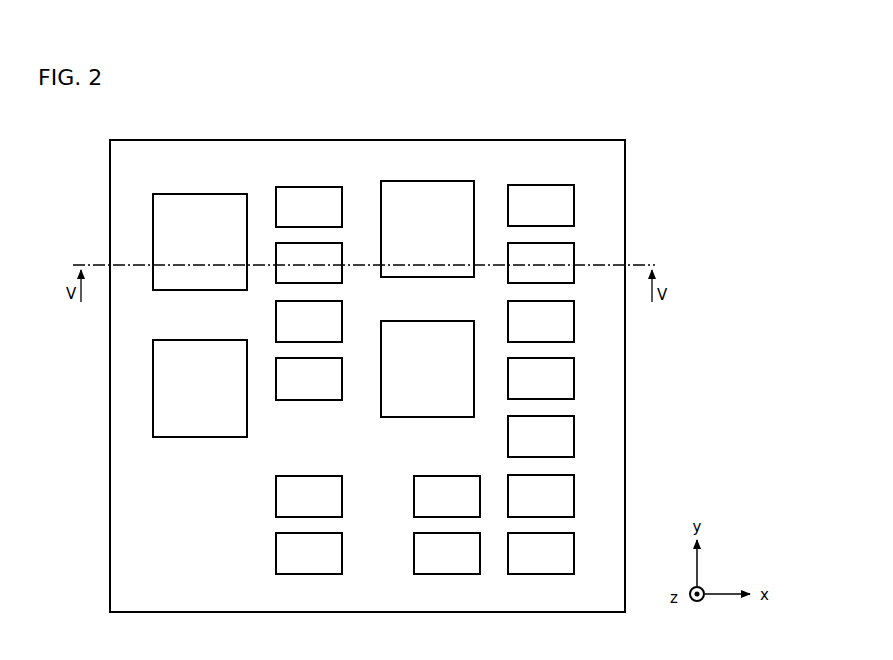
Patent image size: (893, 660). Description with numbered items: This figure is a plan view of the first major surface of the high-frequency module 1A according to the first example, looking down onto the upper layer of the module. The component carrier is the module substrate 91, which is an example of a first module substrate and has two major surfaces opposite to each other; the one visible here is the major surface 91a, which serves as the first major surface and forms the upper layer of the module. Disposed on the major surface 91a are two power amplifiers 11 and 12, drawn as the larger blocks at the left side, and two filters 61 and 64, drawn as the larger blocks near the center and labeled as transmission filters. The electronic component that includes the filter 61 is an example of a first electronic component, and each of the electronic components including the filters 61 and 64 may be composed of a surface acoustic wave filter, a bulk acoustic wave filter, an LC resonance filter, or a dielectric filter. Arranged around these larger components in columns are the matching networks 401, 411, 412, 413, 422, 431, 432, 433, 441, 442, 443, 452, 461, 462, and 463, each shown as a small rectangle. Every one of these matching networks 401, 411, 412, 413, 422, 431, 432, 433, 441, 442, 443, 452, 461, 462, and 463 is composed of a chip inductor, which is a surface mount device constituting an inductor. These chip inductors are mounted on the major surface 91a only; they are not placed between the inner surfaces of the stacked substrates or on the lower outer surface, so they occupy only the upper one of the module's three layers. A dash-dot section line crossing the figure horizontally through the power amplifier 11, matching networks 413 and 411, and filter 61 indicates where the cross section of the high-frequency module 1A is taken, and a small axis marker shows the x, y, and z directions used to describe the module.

The high-frequency module 1A is at (672, 112).
The module substrate 91 is at (444, 140).
The major surface 91a is at (582, 146).
The power amplifier 11 is at (181, 194).
The power amplifier 12 is at (181, 340).
The filter 61 is at (413, 181).
The filter 64 is at (413, 321).
The matching network 401 is at (574, 200).
The matching network 411 is at (574, 257).
The matching network 412 is at (342, 201).
The matching network 413 is at (342, 257).
The matching network 422 is at (342, 500).
The matching network 431 is at (574, 374).
The matching network 432 is at (574, 498).
The matching network 433 is at (574, 561).
The matching network 441 is at (574, 317).
The matching network 442 is at (359, 303).
The matching network 443 is at (342, 373).
The matching network 452 is at (342, 561).
The matching network 461 is at (574, 433).
The matching network 462 is at (432, 476).
The matching network 463 is at (432, 574).